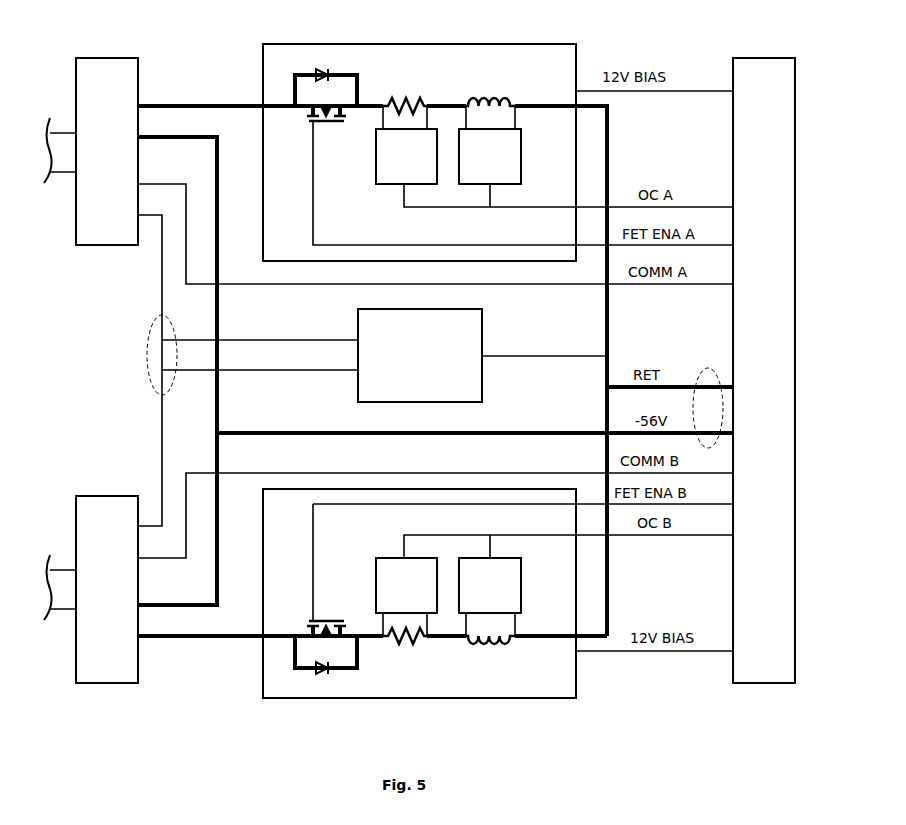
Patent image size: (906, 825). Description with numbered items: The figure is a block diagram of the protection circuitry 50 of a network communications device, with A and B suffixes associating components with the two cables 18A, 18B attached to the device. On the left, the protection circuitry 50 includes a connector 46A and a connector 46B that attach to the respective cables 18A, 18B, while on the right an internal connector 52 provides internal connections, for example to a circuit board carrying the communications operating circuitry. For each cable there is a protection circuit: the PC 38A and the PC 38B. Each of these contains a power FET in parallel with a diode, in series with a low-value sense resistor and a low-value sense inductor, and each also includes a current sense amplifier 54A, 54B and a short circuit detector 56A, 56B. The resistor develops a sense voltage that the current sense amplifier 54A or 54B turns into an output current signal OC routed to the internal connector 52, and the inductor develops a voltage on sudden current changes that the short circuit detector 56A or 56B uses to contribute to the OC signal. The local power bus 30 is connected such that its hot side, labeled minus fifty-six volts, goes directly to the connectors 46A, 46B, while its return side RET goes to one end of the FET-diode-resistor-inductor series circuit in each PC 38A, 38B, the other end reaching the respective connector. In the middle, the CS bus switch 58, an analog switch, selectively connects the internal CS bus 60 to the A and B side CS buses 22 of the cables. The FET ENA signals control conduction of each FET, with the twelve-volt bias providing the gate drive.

The cable 18A is at (62, 140).
The cable 18B is at (62, 576).
The connector 46A is at (107, 151).
The connector 46B is at (107, 589).
The PC 38A is at (537, 52).
The PC 38B is at (545, 690).
The current sense amplifier 54A is at (406, 156).
The short circuit detector 56A is at (490, 156).
The current sense amplifier 54B is at (406, 585).
The short circuit detector 56B is at (490, 585).
The internal connector 52 is at (762, 58).
The CS bus switch 58 is at (420, 355).
The internal CS bus 60 is at (520, 357).
The CS bus 22 is at (148, 335).
The local power bus 30 is at (712, 368).
The protection circuitry 50 is at (228, 755).